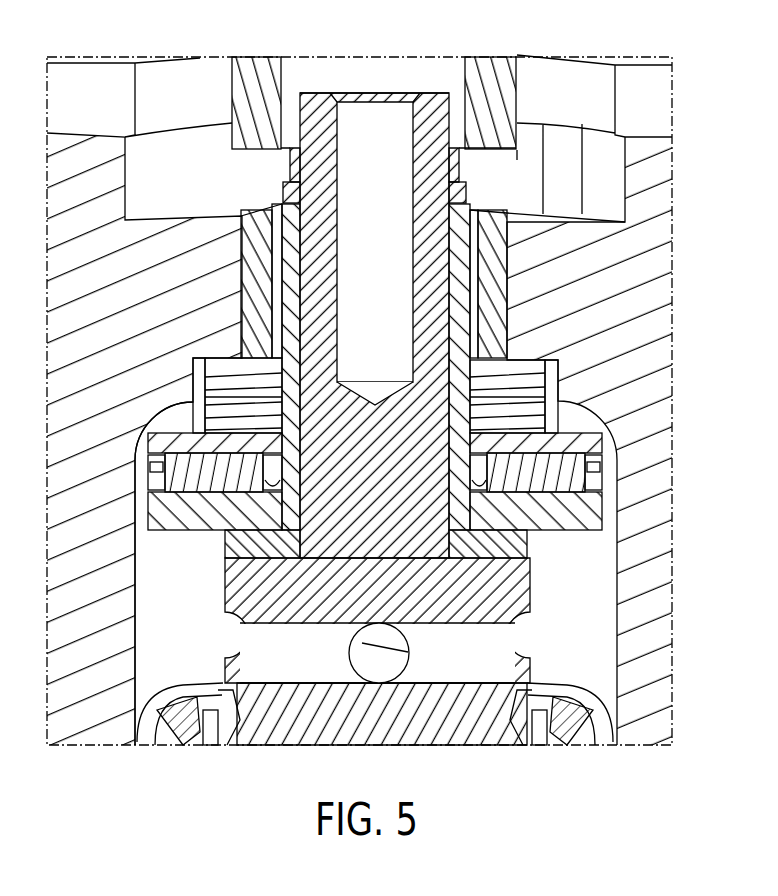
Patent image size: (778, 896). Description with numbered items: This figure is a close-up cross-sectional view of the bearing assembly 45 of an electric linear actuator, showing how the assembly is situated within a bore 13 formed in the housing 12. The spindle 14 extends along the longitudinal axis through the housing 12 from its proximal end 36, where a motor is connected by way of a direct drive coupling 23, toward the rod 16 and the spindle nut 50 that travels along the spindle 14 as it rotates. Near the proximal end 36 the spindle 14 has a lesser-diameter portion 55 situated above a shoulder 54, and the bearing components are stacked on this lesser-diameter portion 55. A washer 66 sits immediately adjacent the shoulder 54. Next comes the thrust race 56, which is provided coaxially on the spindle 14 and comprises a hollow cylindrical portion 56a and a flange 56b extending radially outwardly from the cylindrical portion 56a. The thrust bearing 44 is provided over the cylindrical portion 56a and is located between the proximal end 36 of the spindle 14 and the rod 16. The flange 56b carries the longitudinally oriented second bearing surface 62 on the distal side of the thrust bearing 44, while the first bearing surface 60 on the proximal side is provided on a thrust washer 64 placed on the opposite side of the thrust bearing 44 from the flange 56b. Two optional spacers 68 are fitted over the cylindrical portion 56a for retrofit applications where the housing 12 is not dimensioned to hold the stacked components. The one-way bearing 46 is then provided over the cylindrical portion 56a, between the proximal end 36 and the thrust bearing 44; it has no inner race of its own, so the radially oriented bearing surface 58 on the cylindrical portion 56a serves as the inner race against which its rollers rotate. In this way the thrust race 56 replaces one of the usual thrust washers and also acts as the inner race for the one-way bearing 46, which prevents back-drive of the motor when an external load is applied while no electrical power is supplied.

The housing 12 is at (47, 621).
The bore 13 is at (138, 604).
The spindle 14 is at (366, 535).
The rod 16 is at (583, 690).
The direct drive coupling 23 is at (519, 81).
The proximal end 36 is at (334, 87).
The thrust bearing 44 is at (608, 488).
The bearing assembly 45 is at (541, 321).
The one-way bearing 46 is at (499, 262).
The spindle nut 50 is at (173, 733).
The shoulder 54 is at (484, 556).
The lesser-diameter portion 55 is at (289, 204).
The thrust race 56 is at (269, 243).
The hollow cylindrical portion 56a is at (286, 273).
The flange 56b is at (576, 520).
The radially oriented bearing surface 58 is at (277, 332).
The first bearing surface 60 is at (594, 461).
The second bearing surface 62 is at (189, 487).
The thrust washer 64 is at (569, 445).
The washer 66 is at (224, 542).
The spacers 68 is at (211, 411).